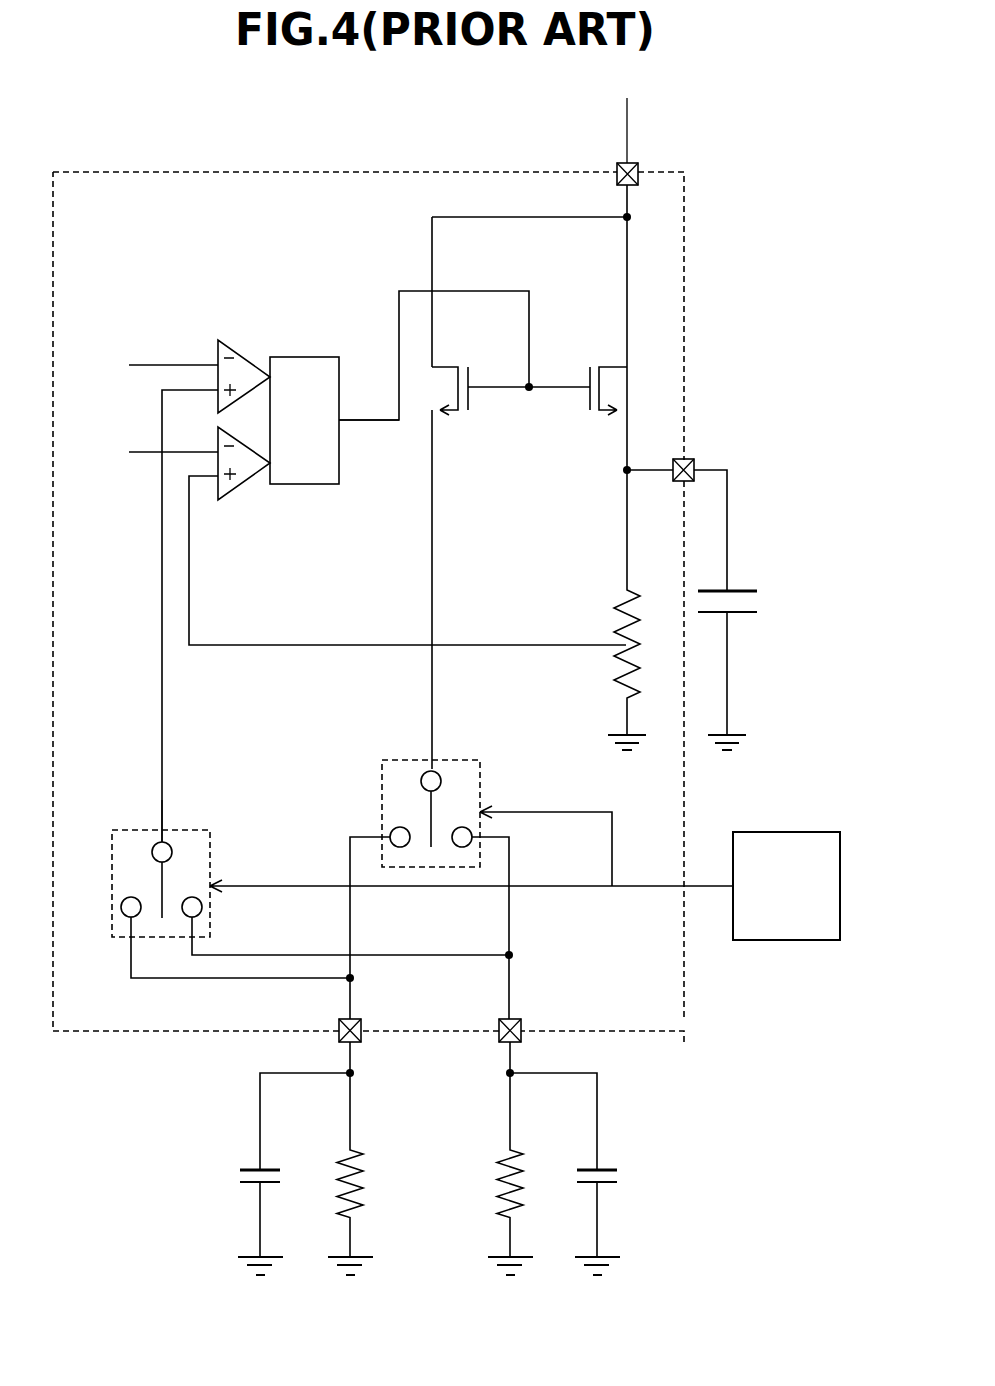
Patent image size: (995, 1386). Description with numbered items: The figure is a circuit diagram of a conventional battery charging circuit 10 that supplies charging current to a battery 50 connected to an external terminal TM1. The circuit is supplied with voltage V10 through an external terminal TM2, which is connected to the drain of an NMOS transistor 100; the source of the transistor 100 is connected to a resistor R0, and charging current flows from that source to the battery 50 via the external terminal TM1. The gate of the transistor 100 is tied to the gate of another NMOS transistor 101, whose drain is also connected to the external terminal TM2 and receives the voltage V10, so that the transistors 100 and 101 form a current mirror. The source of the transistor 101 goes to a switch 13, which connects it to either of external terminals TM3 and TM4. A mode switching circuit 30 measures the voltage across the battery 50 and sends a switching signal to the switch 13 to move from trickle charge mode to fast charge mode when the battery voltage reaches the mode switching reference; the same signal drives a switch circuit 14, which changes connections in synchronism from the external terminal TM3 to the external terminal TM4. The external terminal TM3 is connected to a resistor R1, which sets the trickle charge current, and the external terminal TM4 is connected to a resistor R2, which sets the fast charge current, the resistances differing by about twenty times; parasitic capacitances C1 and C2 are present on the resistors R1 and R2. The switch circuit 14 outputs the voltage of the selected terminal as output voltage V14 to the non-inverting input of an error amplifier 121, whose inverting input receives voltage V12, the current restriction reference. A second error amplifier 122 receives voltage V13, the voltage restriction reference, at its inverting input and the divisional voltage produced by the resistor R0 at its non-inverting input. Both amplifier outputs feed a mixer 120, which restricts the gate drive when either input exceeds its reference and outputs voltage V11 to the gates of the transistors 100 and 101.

The battery charging circuit 10 is at (684, 205).
The NMOS transistor 100 is at (612, 364).
The NMOS transistor 101 is at (445, 366).
The mixer 120 is at (310, 357).
The error amplifier 121 is at (234, 349).
The error amplifier 122 is at (234, 490).
The switch 13 is at (483, 770).
The switch circuit 14 is at (213, 840).
The mode switching circuit 30 is at (757, 832).
The battery 50 is at (734, 590).
The external terminal TM1 is at (697, 460).
The external terminal TM2 is at (641, 162).
The external terminal TM3 is at (340, 1036).
The external terminal TM4 is at (498, 1041).
The resistor R0 is at (612, 635).
The resistor R1 is at (339, 1165).
The resistor R2 is at (521, 1165).
The parasitic capacitance C1 is at (252, 1168).
The parasitic capacitance C2 is at (609, 1168).
The voltage V10 is at (629, 115).
The voltage V11 is at (369, 404).
The voltage V12 is at (150, 363).
The voltage V13 is at (150, 449).
The output voltage V14 is at (133, 820).